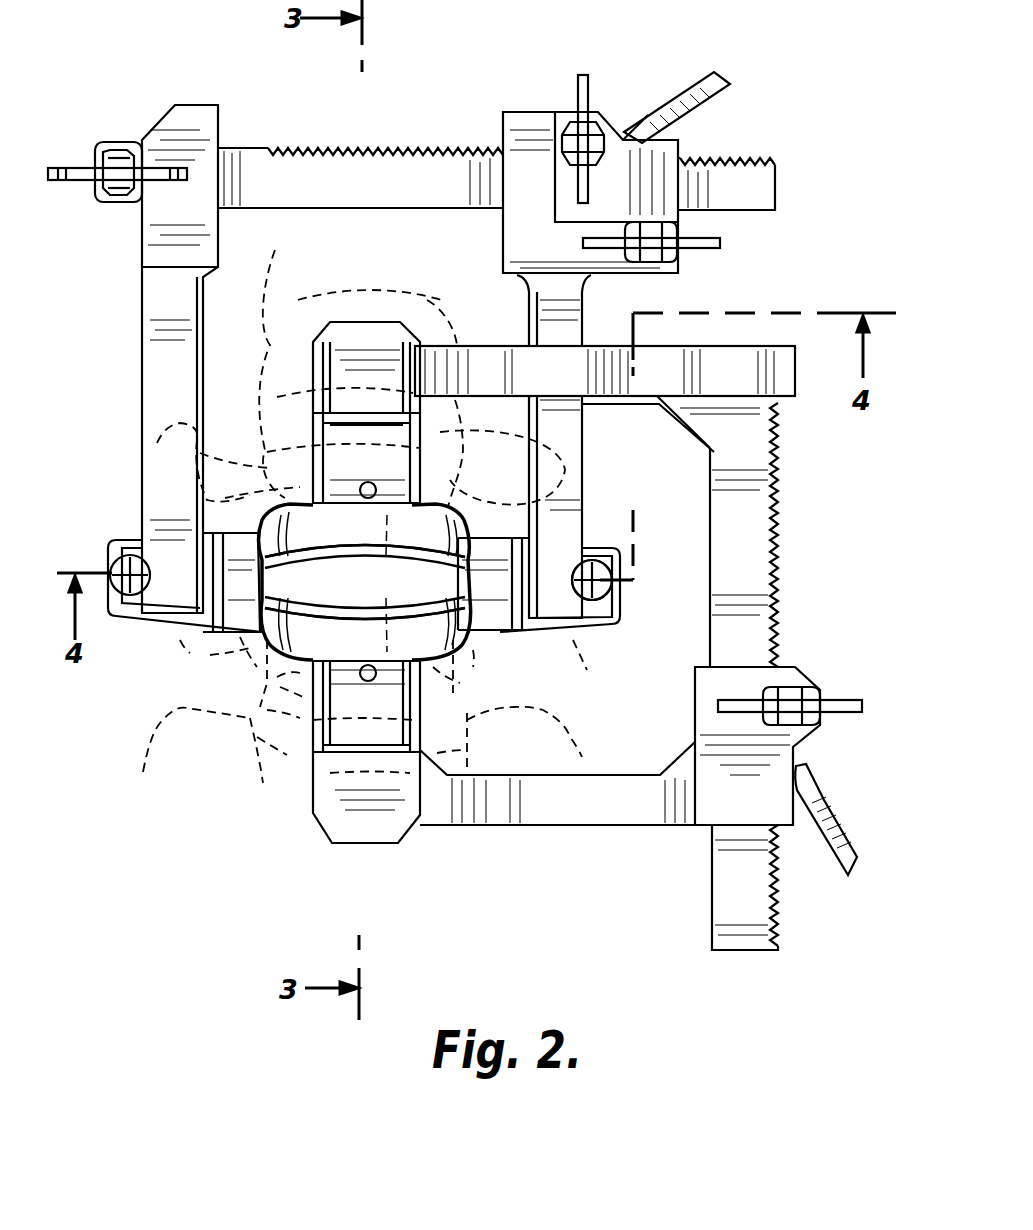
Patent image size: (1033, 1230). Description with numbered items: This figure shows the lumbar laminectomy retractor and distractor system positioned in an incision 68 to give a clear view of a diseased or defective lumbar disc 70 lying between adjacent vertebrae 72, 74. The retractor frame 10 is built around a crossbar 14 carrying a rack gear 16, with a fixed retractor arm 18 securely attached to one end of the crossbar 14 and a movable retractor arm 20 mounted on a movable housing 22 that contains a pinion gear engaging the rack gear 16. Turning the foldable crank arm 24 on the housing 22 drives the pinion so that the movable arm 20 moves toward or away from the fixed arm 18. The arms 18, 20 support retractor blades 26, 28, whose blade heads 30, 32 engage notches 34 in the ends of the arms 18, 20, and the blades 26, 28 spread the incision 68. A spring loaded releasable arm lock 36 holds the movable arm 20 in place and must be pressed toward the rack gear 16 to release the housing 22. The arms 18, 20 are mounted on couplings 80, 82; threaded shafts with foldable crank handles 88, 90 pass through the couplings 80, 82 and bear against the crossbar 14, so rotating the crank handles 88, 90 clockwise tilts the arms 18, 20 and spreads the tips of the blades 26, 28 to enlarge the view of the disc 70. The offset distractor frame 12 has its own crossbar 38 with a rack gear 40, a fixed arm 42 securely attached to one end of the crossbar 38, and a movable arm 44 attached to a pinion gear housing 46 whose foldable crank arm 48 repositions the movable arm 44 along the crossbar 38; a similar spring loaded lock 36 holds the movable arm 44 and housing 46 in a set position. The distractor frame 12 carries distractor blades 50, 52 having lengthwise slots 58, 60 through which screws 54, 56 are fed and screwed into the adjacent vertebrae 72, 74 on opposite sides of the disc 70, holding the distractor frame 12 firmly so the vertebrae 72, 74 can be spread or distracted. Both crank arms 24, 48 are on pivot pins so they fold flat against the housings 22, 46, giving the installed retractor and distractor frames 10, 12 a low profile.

The lumbar laminectomy retractor frame 10 is at (126, 350).
The distractor frame 12 is at (526, 838).
The crossbar 14 is at (778, 184).
The rack gear 16 is at (454, 146).
The fixed retractor arm 18 is at (151, 398).
The movable retractor arm 20 is at (584, 440).
The movable housing 22 is at (672, 144).
The foldable crank arm 24 is at (584, 80).
The retractor blade 26 is at (213, 647).
The retractor blade 28 is at (522, 642).
The blade head 30 is at (130, 550).
The blade head 32 is at (626, 594).
The notches 34 is at (120, 626).
The spring loaded releasable arm lock 36 is at (674, 94).
The crossbar 38 is at (754, 956).
The rack gear 40 is at (776, 556).
The fixed arm 42 is at (718, 346).
The movable arm 44 is at (602, 826).
The pinion gear housing 46 is at (805, 746).
The foldable crank arm 48 is at (828, 696).
The distractor blade 50 is at (333, 437).
The distractor blade 52 is at (313, 730).
The screw 54 is at (376, 466).
The screw 56 is at (420, 686).
The lengthwise slot 58 is at (430, 470).
The lengthwise slot 60 is at (313, 685).
The incision 68 is at (206, 494).
The lumbar disc 70 is at (382, 592).
The vertebra 72 is at (352, 536).
The vertebra 74 is at (348, 652).
The coupling 80 is at (128, 204).
The coupling 82 is at (542, 118).
The foldable crank handle 88 is at (76, 168).
The foldable crank handle 90 is at (704, 248).